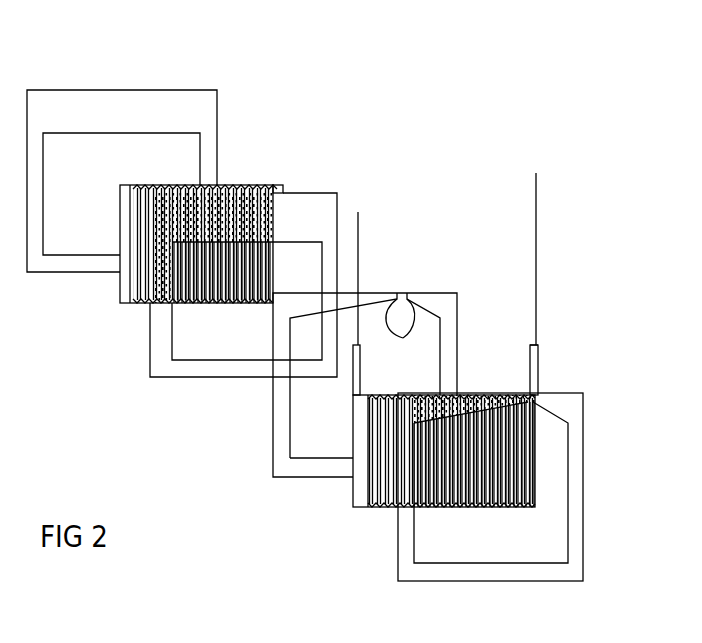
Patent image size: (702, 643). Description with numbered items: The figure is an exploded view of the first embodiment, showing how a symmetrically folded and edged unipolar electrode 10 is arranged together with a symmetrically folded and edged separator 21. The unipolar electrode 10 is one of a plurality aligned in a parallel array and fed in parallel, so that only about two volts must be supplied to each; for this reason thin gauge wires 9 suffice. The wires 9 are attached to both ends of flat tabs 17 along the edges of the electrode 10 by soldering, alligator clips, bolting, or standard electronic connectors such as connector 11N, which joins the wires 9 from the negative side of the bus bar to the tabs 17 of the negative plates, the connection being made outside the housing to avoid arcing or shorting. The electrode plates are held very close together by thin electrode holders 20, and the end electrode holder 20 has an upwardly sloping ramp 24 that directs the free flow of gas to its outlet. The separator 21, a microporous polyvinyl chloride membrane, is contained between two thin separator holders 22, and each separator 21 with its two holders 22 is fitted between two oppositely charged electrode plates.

The wires 9 is at (358, 238).
The unipolar electrode 10 is at (362, 488).
The connector 11N is at (537, 344).
The flat tab 17 is at (357, 378).
The electrode holder 20 is at (280, 418).
The separator 21 is at (125, 288).
The separator holder 22 is at (122, 98).
The ramp 24 is at (403, 336).